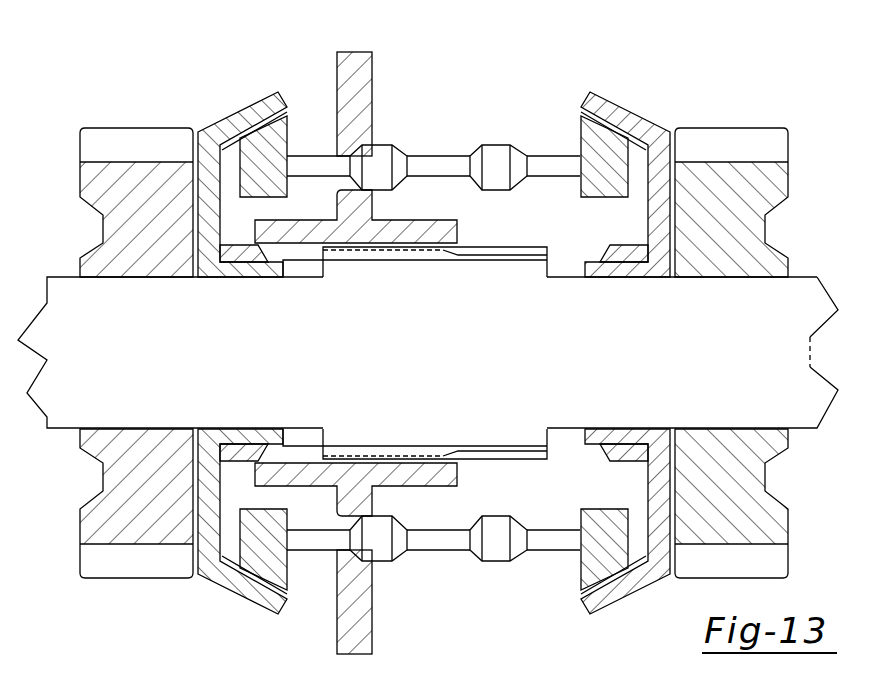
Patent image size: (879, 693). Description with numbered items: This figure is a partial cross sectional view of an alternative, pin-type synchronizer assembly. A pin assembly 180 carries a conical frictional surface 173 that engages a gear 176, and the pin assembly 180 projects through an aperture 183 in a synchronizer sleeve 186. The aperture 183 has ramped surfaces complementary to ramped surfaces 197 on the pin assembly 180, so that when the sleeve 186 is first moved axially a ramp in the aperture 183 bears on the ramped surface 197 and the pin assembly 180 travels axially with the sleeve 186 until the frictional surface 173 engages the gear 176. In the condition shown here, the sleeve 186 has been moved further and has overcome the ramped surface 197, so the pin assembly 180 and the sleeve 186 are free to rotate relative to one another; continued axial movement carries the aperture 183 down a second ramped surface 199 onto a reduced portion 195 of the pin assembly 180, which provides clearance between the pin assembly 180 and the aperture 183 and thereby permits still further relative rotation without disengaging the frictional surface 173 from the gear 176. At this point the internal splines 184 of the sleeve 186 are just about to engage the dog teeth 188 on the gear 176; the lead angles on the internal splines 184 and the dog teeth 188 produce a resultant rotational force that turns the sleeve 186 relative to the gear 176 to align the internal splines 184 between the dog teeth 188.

The gear 176 is at (100, 185).
The conical frictional surface 173 is at (253, 127).
The pin assembly 180 is at (300, 82).
The reduced portion 195 is at (330, 151).
The synchronizer sleeve 186 is at (370, 75).
The aperture 183 is at (390, 140).
The ramped surface 197 is at (405, 154).
The second ramped surface 199 is at (382, 180).
The dog teeth 188 is at (240, 252).
The internal splines 184 is at (295, 255).